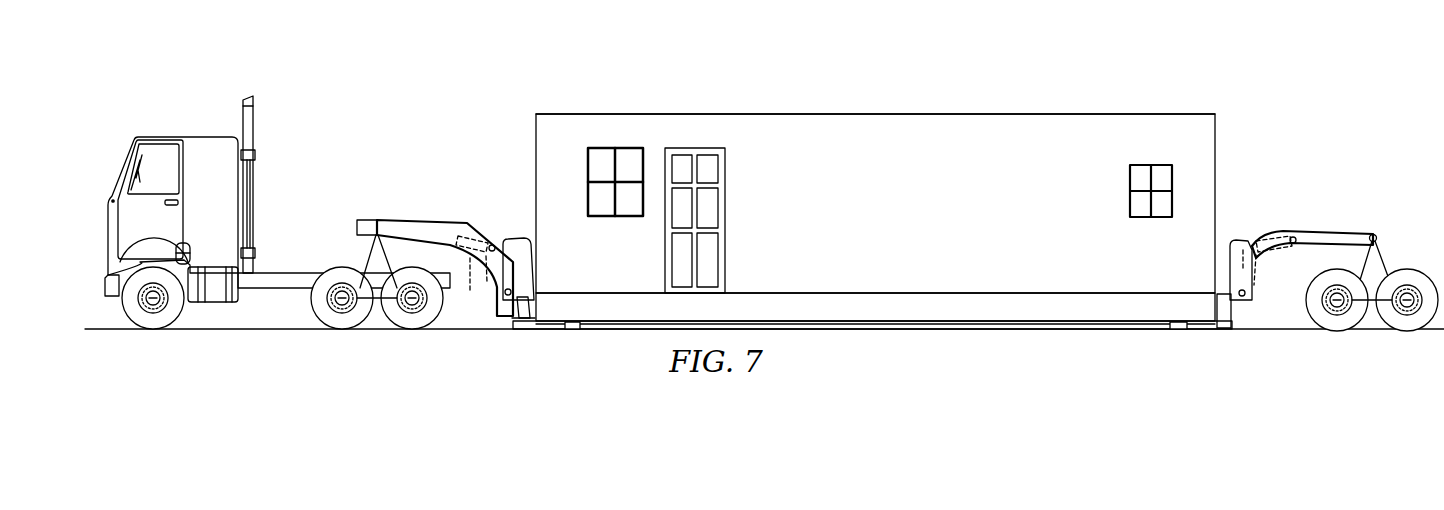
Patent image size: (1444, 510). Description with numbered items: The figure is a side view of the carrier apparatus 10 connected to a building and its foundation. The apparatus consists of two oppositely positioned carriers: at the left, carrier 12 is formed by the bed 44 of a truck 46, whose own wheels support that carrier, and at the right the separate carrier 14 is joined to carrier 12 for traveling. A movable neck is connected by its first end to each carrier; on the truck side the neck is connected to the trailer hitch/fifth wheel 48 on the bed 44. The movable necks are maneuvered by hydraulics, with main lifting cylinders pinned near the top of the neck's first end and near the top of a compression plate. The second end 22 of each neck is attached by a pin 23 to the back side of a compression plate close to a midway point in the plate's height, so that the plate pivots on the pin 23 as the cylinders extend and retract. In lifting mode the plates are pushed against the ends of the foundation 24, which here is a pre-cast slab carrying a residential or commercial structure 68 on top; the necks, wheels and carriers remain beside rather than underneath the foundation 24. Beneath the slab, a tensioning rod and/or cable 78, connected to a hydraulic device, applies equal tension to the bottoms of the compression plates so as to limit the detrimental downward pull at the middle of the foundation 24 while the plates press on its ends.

The carrier apparatus 10 is at (875, 169).
The carrier 12 is at (445, 216).
The carrier 14 is at (1327, 253).
The second end 22 is at (1243, 317).
The pin 23 is at (517, 275).
The foundation 24 is at (1067, 307).
The bed 44 is at (303, 273).
The truck 46 is at (222, 209).
The trailer hitch/fifth wheel 48 is at (368, 256).
The residential or commercial structure 68 is at (582, 113).
The tensioning rod and/or cable 78 is at (921, 331).